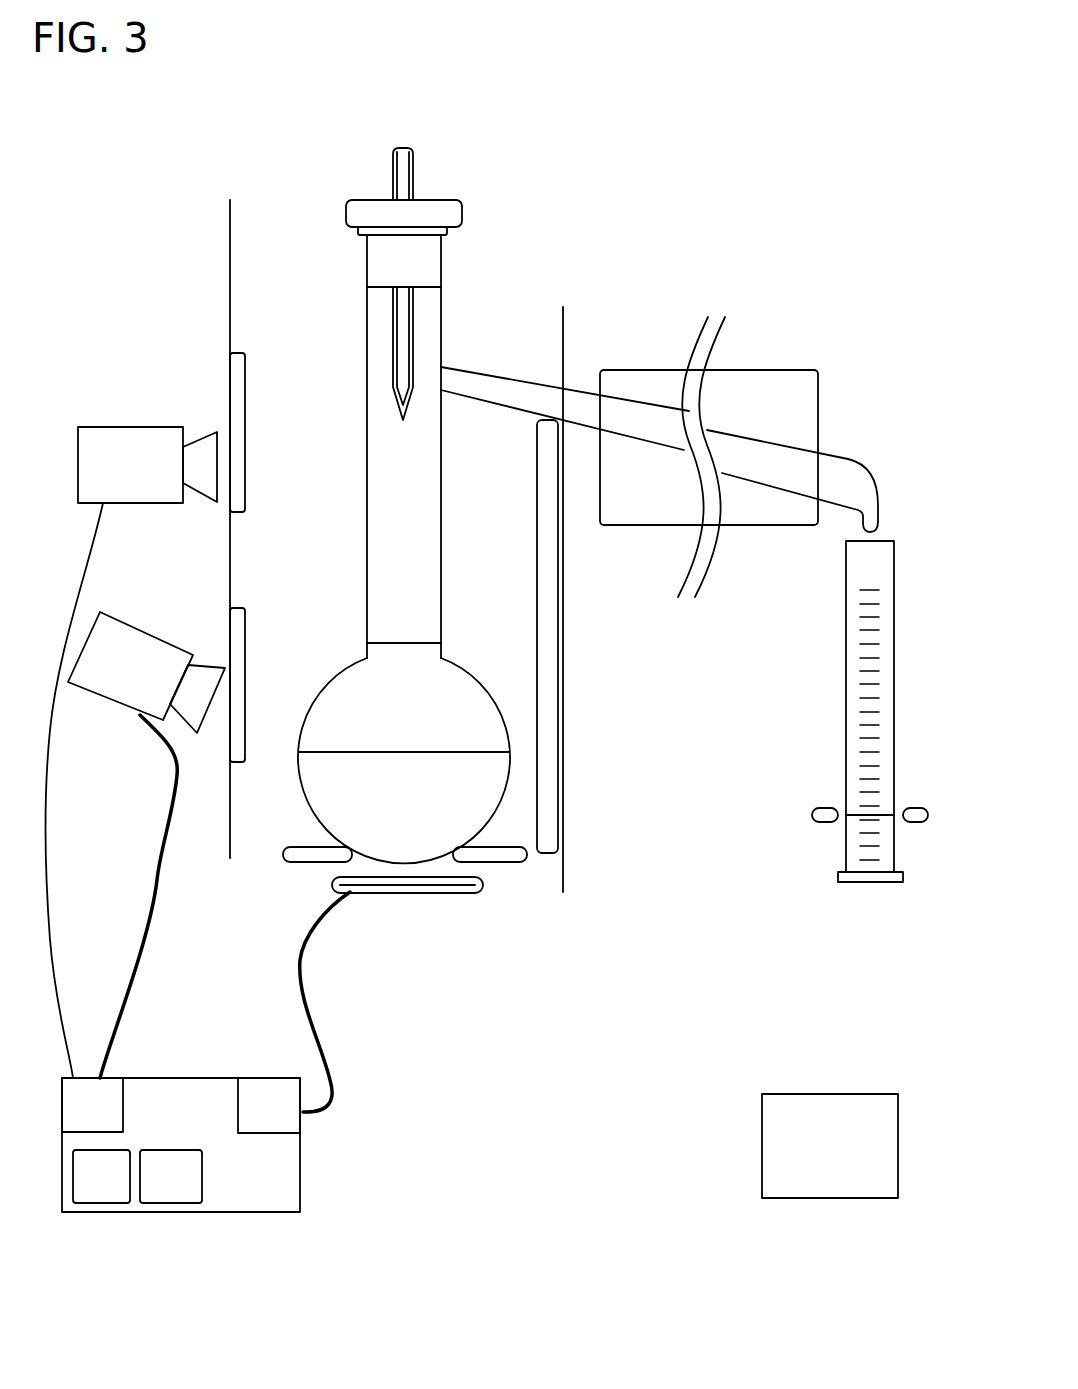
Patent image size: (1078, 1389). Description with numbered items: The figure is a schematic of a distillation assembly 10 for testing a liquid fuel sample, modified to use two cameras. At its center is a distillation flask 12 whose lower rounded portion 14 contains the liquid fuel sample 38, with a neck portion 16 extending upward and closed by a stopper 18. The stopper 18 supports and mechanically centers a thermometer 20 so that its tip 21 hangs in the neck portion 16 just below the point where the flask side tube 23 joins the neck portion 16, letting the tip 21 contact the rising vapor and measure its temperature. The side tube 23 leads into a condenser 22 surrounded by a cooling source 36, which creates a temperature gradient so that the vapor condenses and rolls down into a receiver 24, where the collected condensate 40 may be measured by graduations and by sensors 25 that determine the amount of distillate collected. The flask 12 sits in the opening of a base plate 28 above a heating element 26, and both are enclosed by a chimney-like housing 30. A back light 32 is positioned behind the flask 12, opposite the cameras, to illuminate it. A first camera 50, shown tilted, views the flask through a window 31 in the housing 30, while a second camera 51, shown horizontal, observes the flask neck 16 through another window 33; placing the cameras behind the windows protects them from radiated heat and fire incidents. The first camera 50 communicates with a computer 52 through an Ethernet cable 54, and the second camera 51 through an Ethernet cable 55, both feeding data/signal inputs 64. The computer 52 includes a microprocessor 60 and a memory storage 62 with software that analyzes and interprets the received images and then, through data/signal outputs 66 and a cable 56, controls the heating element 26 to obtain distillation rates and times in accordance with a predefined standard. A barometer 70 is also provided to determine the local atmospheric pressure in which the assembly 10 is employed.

The distillation assembly 10 is at (714, 188).
The distillation flask 12 is at (574, 488).
The lower rounded portion 14 is at (404, 760).
The neck portion 16 is at (404, 446).
The stopper 18 is at (343, 211).
The thermometer 20 is at (393, 170).
The tip 21 is at (403, 424).
The condenser 22 is at (590, 388).
The flask side tube 23 is at (485, 366).
The receiver 24 is at (840, 687).
The sensors 25 is at (818, 818).
The heating element 26 is at (404, 898).
The base plate 28 is at (304, 865).
The housing 30 is at (230, 275).
The window 31 is at (226, 640).
The back light 32 is at (537, 855).
The window 33 is at (224, 390).
The cooling source 36 is at (735, 372).
The liquid fuel sample 38 is at (404, 779).
The condensate 40 is at (855, 815).
The camera 50 is at (146, 672).
The second camera 51 is at (147, 465).
The computer 52 is at (181, 1145).
The Ethernet cable 54 is at (172, 833).
The Ethernet cable 55 is at (70, 612).
The cable 56 is at (386, 1023).
The microprocessor 60 is at (101, 1176).
The memory storage 62 is at (171, 1176).
The data/signal inputs 64 is at (92, 1105).
The data/signal outputs 66 is at (269, 1105).
The barometer 70 is at (830, 1146).